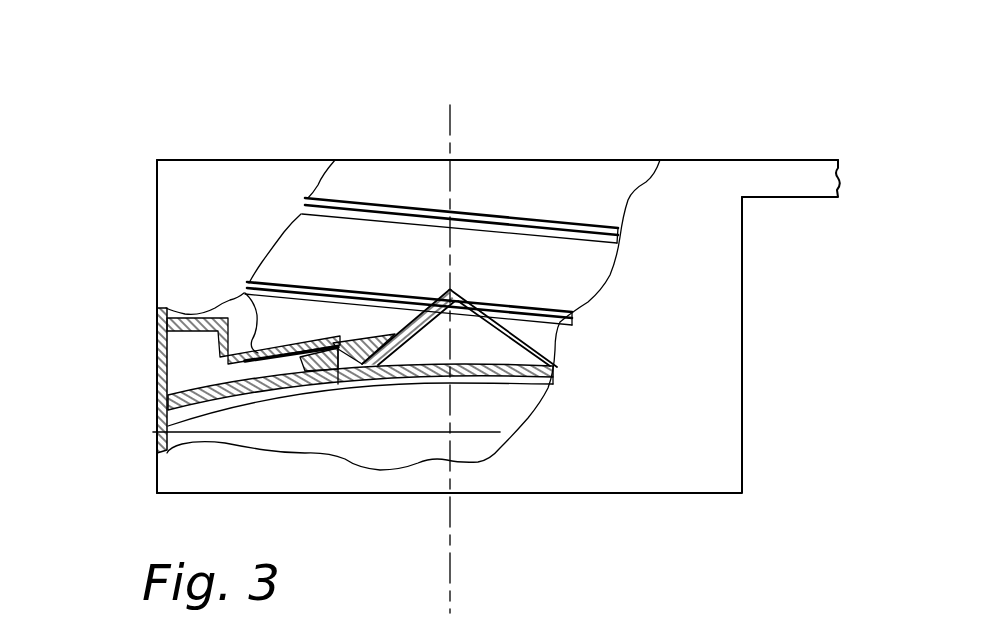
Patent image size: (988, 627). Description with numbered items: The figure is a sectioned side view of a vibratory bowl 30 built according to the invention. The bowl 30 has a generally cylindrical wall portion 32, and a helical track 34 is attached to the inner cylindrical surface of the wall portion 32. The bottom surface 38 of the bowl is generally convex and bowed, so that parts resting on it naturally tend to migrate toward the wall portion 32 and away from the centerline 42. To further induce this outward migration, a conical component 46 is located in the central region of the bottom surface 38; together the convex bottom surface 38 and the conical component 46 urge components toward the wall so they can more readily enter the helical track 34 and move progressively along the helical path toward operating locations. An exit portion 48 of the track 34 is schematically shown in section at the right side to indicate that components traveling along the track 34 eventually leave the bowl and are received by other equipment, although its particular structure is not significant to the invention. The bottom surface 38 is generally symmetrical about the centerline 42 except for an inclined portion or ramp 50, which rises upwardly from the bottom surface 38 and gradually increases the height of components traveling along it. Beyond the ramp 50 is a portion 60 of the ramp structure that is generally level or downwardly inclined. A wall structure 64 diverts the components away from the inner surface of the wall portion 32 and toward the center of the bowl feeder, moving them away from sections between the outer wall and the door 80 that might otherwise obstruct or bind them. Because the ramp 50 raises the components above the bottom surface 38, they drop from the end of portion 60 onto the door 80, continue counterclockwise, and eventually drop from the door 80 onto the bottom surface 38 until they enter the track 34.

The vibratory bowl 30 is at (660, 140).
The cylindrical wall portion 32 is at (167, 210).
The helical track 34 is at (360, 200).
The bottom surface 38 is at (533, 380).
The centerline 42 is at (450, 575).
The conical component 46 is at (455, 291).
The exit portion 48 is at (787, 176).
The ramp 50 is at (260, 328).
The level or downwardly inclined portion 60 is at (338, 342).
The wall structure 64 is at (253, 283).
The door 80 is at (153, 433).